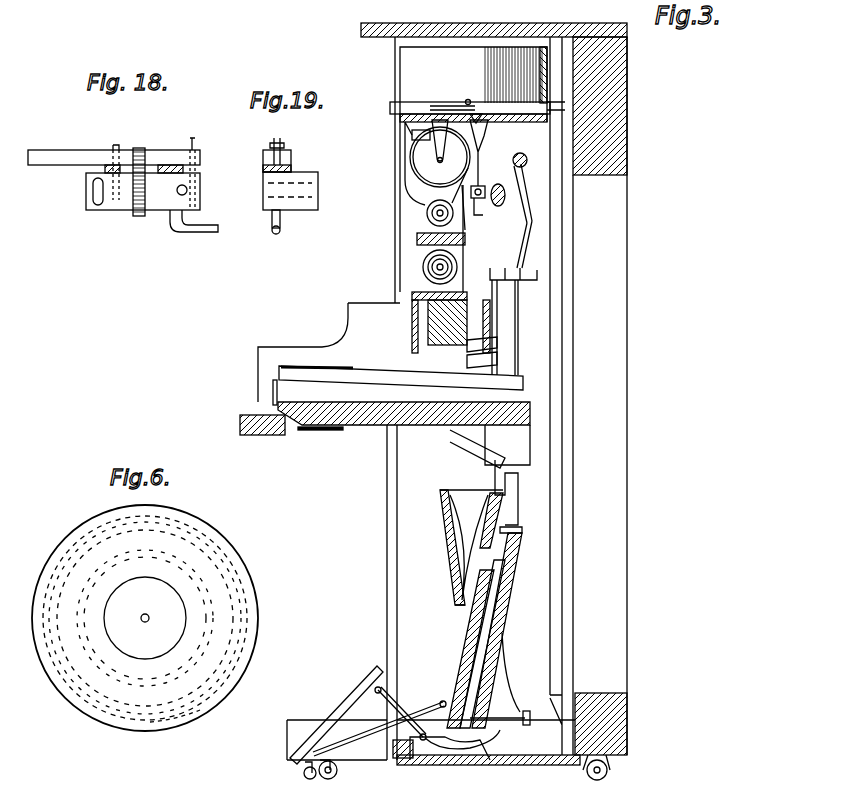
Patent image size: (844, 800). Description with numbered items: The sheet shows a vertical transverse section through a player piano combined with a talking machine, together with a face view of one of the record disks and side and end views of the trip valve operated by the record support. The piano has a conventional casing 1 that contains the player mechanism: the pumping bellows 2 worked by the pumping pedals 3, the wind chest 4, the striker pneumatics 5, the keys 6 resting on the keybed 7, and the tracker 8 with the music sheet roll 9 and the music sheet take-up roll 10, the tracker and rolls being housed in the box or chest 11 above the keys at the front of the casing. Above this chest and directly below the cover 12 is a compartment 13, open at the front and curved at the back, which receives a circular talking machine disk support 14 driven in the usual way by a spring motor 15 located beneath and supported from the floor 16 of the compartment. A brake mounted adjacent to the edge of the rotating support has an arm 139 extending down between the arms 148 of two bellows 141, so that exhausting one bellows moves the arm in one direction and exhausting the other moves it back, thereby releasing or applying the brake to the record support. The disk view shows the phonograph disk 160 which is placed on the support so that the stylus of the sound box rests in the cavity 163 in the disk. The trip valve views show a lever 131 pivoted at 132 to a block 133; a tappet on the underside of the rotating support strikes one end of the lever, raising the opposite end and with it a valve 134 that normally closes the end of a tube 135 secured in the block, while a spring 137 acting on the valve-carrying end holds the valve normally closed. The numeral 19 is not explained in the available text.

In FIG. 3, the casing 1 is at (568, 28).
In FIG. 3, the pumping bellows 2 is at (505, 612).
In FIG. 3, the pumping pedals 3 is at (357, 692).
In FIG. 3, the wind chest 4 is at (470, 618).
In FIG. 3, the striker pneumatics 5 is at (475, 360).
In FIG. 3, the keys 6 is at (322, 367).
In FIG. 3, the keybed 7 is at (372, 423).
In FIG. 3, the tracker 8 is at (417, 239).
In FIG. 3, the music sheet roll 9 is at (434, 211).
In FIG. 3, the music sheet take-up roll 10 is at (424, 268).
In FIG. 3, the box or chest 11 is at (402, 183).
In FIG. 3, the cover 12 is at (421, 24).
In FIG. 3, the compartment 13 is at (415, 63).
In FIG. 3, the talking machine disk support 14 is at (421, 101).
In FIG. 3, the spring motor 15 is at (437, 161).
In FIG. 3, the floor 16 is at (549, 114).
In FIG. 3, the mechanism 19 is at (484, 203).
In FIG. 3, the arm 139 is at (448, 107).
In FIG. 3, the bellows 141 is at (490, 150).
In FIG. 3, the arms of the bellows 148 is at (535, 110).
In FIG. 18, the levers 131 is at (48, 157).
In FIG. 19, the levers 131 is at (288, 153).
In FIG. 18, the pivot 132 is at (115, 148).
In FIG. 18, the block 133 is at (115, 201).
In FIG. 19, the block 133 is at (310, 179).
In FIG. 18, the valve 134 is at (168, 163).
In FIG. 19, the valve 134 is at (293, 161).
In FIG. 18, the tube 135 is at (185, 229).
In FIG. 19, the tube 135 is at (282, 222).
In FIG. 18, the spring 137 is at (145, 148).
In FIG. 6, the phonograph disk 160 is at (220, 598).
In FIG. 6, the cavity 163 is at (156, 732).